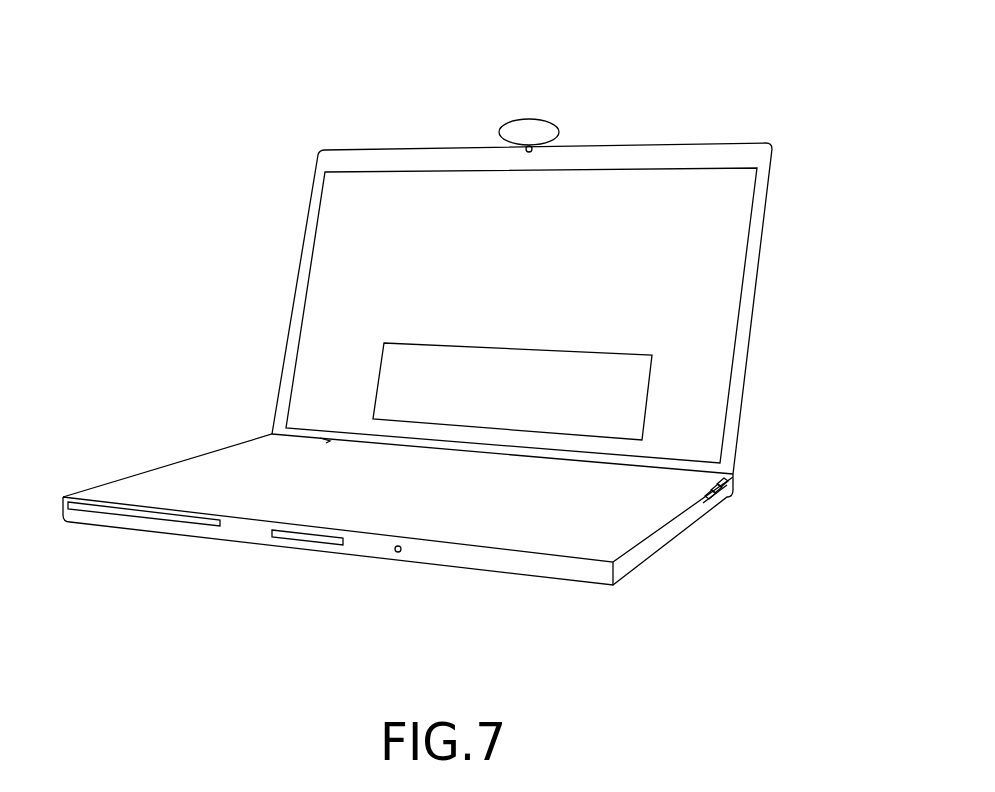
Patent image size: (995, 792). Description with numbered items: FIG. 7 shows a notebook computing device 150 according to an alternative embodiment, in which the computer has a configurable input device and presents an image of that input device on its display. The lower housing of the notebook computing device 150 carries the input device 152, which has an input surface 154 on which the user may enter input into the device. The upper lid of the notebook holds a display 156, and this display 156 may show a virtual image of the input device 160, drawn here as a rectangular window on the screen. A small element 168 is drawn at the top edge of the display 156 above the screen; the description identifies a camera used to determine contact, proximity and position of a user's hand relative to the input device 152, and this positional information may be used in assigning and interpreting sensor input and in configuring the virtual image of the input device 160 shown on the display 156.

The notebook computing device 150 is at (723, 88).
The input device 152 is at (650, 522).
The input surface 154 is at (450, 528).
The display 156 is at (750, 340).
The virtual image of the input device 160 is at (604, 352).
The camera / sensor 168 is at (555, 128).